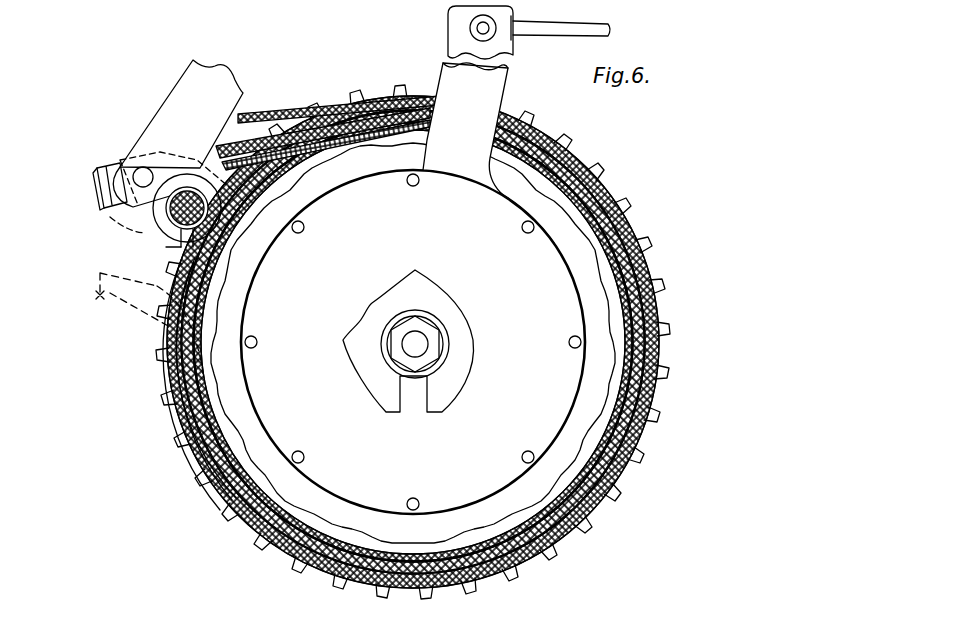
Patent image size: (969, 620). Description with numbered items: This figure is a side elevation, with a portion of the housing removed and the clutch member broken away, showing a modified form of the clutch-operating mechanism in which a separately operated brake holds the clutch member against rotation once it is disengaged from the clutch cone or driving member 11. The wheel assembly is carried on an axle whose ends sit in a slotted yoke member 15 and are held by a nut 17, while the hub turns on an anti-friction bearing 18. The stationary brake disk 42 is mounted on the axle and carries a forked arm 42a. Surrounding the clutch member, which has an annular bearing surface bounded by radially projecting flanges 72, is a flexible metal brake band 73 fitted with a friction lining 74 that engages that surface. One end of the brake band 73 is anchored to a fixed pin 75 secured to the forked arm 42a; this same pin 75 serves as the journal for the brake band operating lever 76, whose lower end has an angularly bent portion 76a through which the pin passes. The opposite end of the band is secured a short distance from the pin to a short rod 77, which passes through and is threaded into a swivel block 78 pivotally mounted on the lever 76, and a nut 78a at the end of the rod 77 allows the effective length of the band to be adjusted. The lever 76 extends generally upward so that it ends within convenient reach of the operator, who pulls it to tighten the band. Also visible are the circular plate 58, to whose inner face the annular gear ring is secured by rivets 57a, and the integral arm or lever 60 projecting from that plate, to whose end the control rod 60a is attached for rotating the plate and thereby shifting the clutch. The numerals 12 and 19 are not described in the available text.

The clutch cone 11 is at (173, 325).
The sprocket teeth 12 is at (179, 455).
The slotted yoke member 15 is at (452, 320).
The nut 17 is at (433, 346).
The anti-friction bearing 18 is at (438, 365).
The rim ring 19 is at (576, 160).
The brake disk 42 is at (247, 375).
The forked arm 42a is at (76, 312).
The rivets 57a is at (446, 487).
The circular plate 58 is at (557, 300).
The arm or lever 60 is at (455, 76).
The control rod 60a is at (636, 27).
The radially projecting flanges 72 is at (355, 104).
The brake band 73 is at (539, 140).
The friction lining 74 is at (601, 195).
The fixed pin 75 is at (166, 218).
The brake band operating lever 76 is at (147, 137).
The angularly bent portion 76a is at (67, 207).
The short rod 77 is at (168, 101).
The swivel block 78 is at (120, 160).
The nut 78a is at (72, 172).